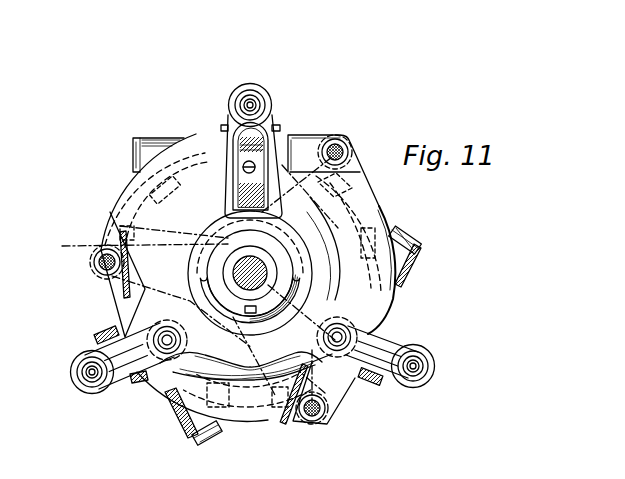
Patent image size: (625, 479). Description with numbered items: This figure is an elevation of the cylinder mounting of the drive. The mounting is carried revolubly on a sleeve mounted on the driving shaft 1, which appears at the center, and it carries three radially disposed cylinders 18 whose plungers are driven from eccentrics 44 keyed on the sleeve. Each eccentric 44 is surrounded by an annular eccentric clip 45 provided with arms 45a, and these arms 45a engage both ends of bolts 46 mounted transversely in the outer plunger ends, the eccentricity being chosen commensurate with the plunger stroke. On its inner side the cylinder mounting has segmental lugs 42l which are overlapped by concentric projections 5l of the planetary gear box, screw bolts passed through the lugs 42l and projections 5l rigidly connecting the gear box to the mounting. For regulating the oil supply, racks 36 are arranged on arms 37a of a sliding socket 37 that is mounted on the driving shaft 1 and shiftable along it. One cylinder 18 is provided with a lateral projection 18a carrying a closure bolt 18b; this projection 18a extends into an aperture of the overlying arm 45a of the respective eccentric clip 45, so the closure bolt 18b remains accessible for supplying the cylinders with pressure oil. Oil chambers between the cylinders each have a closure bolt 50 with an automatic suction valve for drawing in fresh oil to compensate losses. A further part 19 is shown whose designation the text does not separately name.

The driving shaft 1 is at (263, 263).
The cylinders 18 is at (127, 318).
The lateral projection 18a is at (248, 151).
The closure bolt 18b is at (254, 165).
The lug 19 is at (224, 124).
The racks 36 is at (341, 146).
The sliding socket 37 is at (304, 317).
The arms 37a is at (161, 240).
The segmental lugs 42l is at (153, 202).
The eccentrics 44 is at (281, 283).
The annular eccentric clips 45 is at (253, 360).
The arms 45a is at (226, 158).
The bolts 46 is at (255, 101).
The closure bolt 50 is at (132, 157).
The concentric projections 5l is at (135, 218).